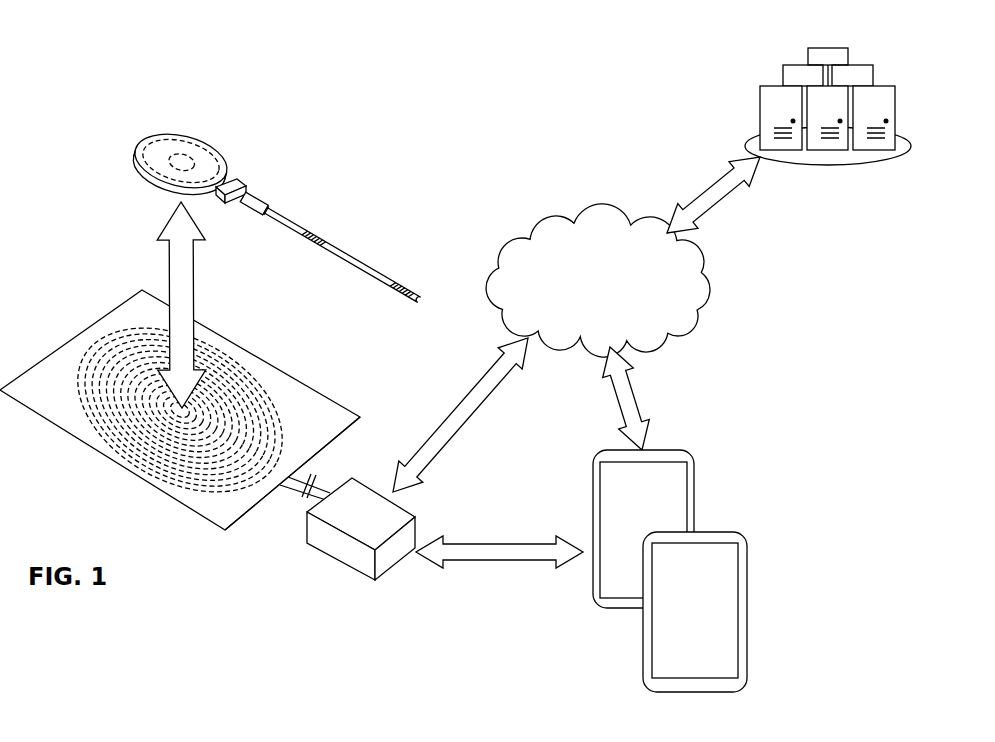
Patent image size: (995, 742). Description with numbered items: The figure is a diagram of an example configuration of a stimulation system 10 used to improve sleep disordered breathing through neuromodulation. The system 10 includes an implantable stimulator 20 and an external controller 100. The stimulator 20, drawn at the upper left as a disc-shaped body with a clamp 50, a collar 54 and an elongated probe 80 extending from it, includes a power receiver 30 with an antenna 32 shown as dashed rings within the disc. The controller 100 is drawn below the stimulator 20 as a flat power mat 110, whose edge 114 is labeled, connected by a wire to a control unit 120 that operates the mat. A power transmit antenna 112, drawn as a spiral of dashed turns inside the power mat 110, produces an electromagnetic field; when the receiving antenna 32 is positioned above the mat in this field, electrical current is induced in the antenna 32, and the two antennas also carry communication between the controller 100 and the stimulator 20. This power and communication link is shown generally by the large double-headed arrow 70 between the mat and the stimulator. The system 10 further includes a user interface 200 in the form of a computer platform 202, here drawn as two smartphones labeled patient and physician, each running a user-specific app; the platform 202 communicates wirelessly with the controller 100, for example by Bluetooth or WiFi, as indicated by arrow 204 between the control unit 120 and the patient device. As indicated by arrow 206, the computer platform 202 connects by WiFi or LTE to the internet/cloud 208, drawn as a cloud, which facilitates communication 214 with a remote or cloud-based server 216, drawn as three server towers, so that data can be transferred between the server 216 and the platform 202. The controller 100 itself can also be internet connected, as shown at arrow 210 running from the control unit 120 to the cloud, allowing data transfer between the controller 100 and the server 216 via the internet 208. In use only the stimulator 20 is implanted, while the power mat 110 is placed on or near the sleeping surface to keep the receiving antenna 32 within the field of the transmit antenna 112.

The stimulation system 10 is at (98, 127).
The implantable stimulator 20 is at (333, 167).
The power receiver 30 is at (215, 150).
The antenna 32 is at (181, 137).
The clamp 50 is at (233, 185).
The collar 54 is at (253, 208).
The power/communication link 70 is at (177, 288).
The probe 80 is at (358, 262).
The external controller 100 is at (230, 552).
The power mat 110 is at (300, 397).
The power transmit antenna 112 is at (233, 373).
The pad edge 114 is at (332, 420).
The control unit 120 is at (345, 548).
The user interface 200 is at (607, 648).
The computer platform 202 is at (717, 535).
The wireless communication arrow 204 is at (488, 552).
The platform-to-internet connection arrow 206 is at (633, 385).
The internet/cloud 208 is at (540, 228).
The controller internet connection 210 is at (470, 417).
The communication with server 214 is at (722, 200).
The server 216 is at (760, 107).